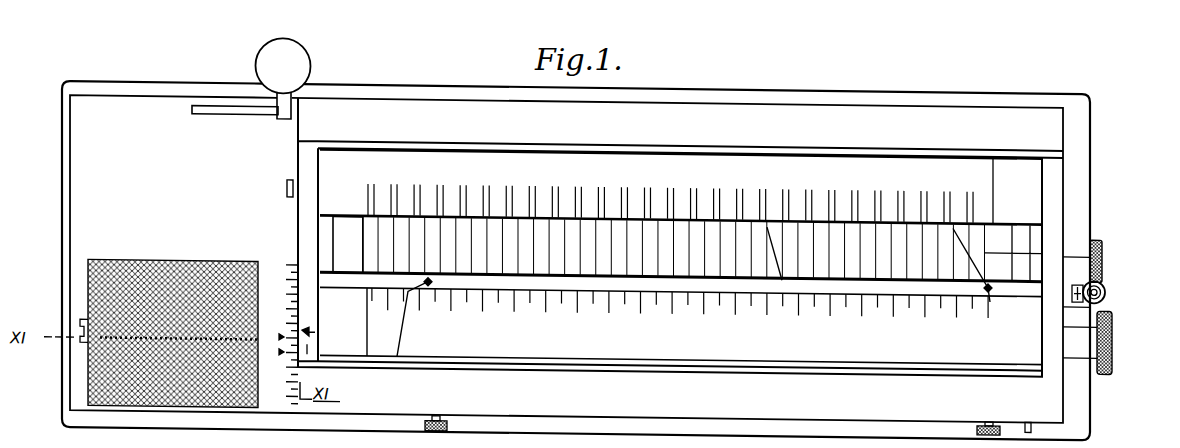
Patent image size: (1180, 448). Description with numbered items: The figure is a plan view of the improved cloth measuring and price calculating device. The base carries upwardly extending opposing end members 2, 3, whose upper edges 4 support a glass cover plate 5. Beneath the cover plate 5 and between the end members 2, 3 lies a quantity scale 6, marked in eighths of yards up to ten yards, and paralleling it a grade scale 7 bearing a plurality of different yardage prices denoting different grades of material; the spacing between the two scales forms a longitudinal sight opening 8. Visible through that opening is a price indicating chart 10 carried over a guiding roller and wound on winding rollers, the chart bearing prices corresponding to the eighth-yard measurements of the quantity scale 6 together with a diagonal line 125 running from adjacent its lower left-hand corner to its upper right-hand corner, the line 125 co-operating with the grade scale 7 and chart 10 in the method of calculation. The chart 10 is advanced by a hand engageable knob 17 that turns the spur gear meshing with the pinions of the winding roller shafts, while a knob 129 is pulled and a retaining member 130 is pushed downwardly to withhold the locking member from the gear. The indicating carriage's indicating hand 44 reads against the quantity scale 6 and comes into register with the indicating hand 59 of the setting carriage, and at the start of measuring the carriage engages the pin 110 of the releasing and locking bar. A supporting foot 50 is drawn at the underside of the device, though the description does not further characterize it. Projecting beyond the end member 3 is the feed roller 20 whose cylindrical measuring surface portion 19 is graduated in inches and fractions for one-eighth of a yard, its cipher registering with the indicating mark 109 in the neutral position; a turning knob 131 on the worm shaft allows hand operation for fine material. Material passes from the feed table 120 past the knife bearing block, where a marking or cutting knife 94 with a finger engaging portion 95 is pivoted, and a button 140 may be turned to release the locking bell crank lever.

The end member 2 is at (1053, 160).
The end member 3 is at (305, 165).
The upper edges 4 is at (773, 419).
The glass cover plate 5 is at (316, 182).
The quantity scale 6 is at (890, 347).
The grade scale 7 is at (470, 158).
The longitudinal sight opening 8 is at (315, 218).
The price indicating chart 10 is at (333, 241).
The hand engageable knob 17 is at (1098, 226).
The measuring surface portion 19 is at (279, 395).
The feed roller 20 is at (133, 265).
The indicating hand 44 is at (988, 276).
The supporting foot 50 is at (438, 427).
The indicating hand 59 is at (398, 348).
The marking or cutting knife 94 is at (287, 116).
The finger engaging portion 95 is at (301, 60).
The indicating mark 109 is at (308, 327).
The pin 110 is at (97, 428).
The feed table 120 is at (184, 187).
The diagonal line 125 is at (767, 218).
The knob 129 is at (1103, 277).
The retaining member 130 is at (1079, 252).
The turning knob 131 is at (1112, 348).
The button 140 is at (287, 185).